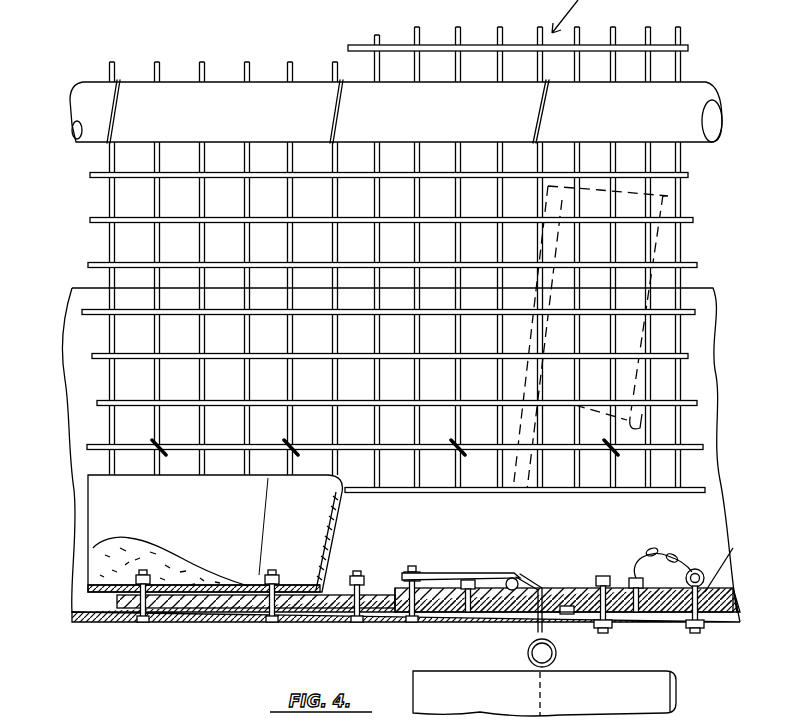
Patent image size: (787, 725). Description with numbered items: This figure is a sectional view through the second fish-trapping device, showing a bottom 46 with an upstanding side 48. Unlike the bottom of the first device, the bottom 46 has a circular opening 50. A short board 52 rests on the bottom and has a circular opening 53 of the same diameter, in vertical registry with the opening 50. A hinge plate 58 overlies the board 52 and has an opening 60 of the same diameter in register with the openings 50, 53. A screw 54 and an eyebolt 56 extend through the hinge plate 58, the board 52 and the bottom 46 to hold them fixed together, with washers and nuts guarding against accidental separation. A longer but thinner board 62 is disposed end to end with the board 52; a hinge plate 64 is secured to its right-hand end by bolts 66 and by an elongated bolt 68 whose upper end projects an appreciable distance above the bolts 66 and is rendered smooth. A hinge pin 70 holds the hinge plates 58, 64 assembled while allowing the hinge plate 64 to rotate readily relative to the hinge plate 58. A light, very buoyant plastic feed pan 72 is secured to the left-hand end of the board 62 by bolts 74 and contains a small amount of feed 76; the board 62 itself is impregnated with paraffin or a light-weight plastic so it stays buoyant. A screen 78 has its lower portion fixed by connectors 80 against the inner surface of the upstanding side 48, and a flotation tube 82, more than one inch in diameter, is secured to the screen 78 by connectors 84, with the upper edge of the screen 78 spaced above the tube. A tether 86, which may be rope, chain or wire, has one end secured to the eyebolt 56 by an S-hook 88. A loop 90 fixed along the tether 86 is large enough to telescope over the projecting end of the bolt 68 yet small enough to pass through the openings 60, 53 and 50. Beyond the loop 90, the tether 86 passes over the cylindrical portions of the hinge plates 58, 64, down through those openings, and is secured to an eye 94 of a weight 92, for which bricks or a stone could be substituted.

The bottom 46 is at (320, 0).
The upstanding side 48 is at (705, 366).
The circular opening 50 is at (564, 612).
The short board 52 is at (722, 615).
The circular opening 53 is at (567, 615).
The screw 54 is at (603, 585).
The eyebolt 56 is at (705, 592).
The hinge plate 58 is at (703, 580).
The opening 60 is at (553, 590).
The board 62 is at (190, 607).
The hinge plate 64 is at (383, 595).
The bolts 66 is at (357, 578).
The elongated bolt 68 is at (412, 567).
The hinge pin 70 is at (518, 576).
The feed pan 72 is at (93, 502).
The bolts 74 is at (270, 573).
The feed 76 is at (100, 558).
The screen 78 is at (683, 243).
The connectors 80 is at (285, 445).
The flotation tube 82 is at (698, 92).
The connectors 84 is at (117, 116).
The tether 86 is at (466, 580).
The S-hook 88 is at (695, 568).
The loop 90 is at (412, 572).
The weight 92 is at (664, 690).
The eye 94 is at (527, 651).